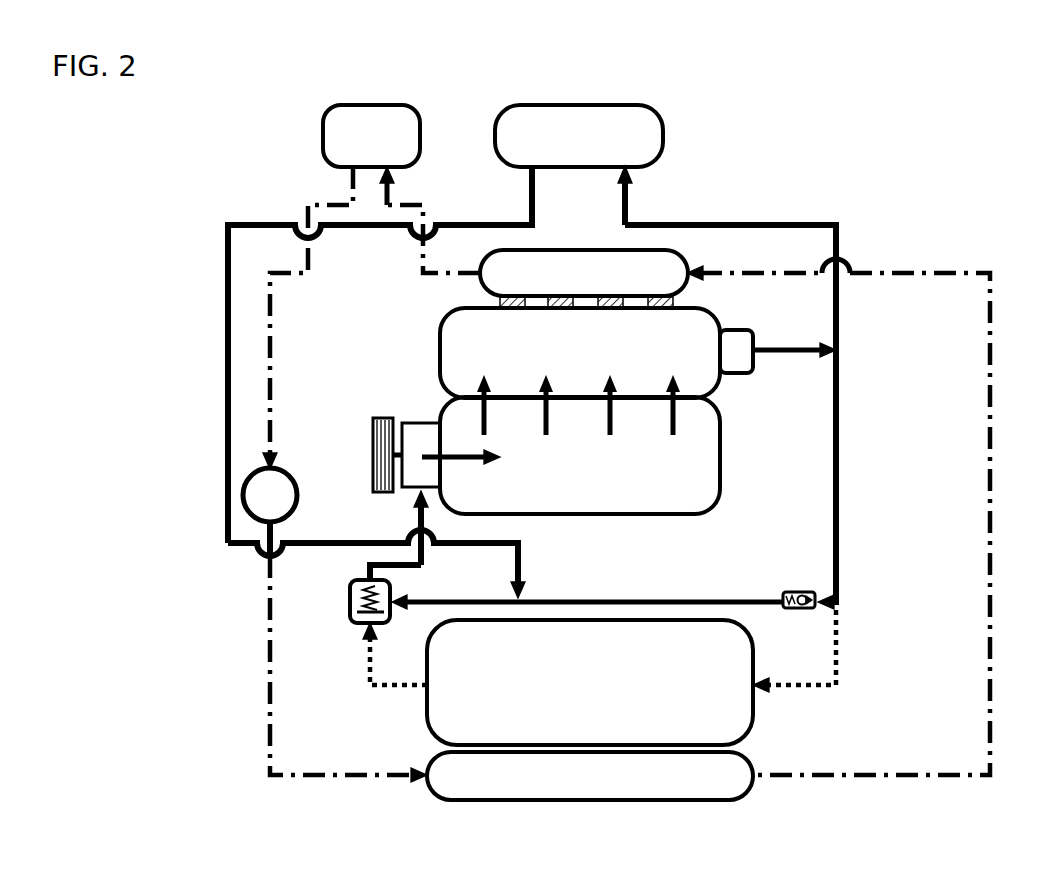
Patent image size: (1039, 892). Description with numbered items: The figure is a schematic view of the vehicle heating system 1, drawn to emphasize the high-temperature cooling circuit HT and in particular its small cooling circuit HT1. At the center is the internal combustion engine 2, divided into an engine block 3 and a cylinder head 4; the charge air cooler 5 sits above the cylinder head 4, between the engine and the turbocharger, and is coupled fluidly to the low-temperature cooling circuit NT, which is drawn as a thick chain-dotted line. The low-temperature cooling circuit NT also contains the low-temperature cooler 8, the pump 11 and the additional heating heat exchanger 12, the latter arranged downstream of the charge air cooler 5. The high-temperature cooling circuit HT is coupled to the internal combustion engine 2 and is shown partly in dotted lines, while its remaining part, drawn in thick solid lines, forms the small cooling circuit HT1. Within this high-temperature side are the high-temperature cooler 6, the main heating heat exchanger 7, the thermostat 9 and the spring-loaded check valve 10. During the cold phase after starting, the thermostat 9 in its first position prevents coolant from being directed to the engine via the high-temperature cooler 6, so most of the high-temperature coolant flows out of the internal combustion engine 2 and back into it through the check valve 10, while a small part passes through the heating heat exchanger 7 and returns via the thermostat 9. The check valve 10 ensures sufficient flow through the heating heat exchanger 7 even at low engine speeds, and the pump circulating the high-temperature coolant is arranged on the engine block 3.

The vehicle heating system 1 is at (942, 196).
The internal combustion engine 2 is at (400, 379).
The engine block 3 is at (698, 493).
The cylinder head 4 is at (453, 352).
The charge air cooler 5 is at (603, 263).
The high-temperature cooler 6 is at (738, 710).
The heating heat exchanger 7 is at (647, 143).
The low-temperature cooler 8 is at (442, 770).
The thermostat 9 is at (340, 636).
The spring-loaded check valve 10 is at (765, 583).
The pump 11 is at (278, 483).
The additional heating heat exchanger 12 is at (340, 149).
The high-temperature cooling circuit HT is at (853, 407).
The small cooling circuit HT1 is at (846, 485).
The low-temperature cooling circuit NT is at (988, 672).